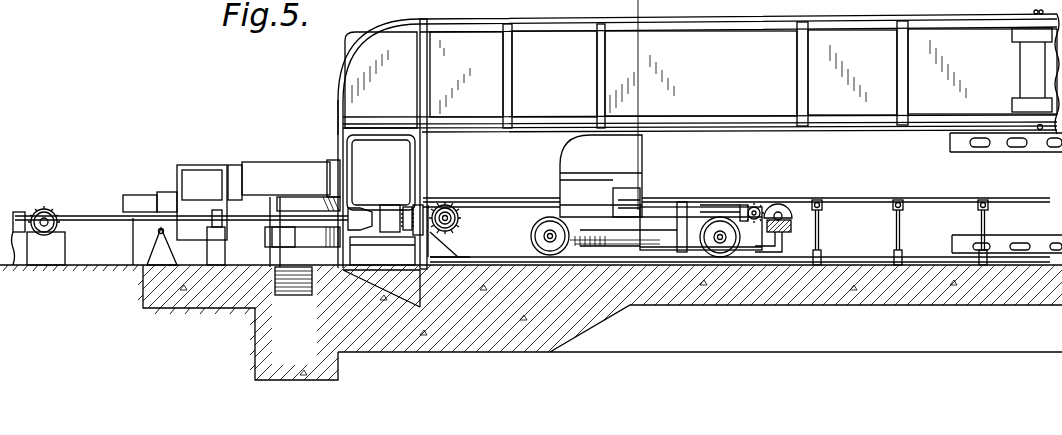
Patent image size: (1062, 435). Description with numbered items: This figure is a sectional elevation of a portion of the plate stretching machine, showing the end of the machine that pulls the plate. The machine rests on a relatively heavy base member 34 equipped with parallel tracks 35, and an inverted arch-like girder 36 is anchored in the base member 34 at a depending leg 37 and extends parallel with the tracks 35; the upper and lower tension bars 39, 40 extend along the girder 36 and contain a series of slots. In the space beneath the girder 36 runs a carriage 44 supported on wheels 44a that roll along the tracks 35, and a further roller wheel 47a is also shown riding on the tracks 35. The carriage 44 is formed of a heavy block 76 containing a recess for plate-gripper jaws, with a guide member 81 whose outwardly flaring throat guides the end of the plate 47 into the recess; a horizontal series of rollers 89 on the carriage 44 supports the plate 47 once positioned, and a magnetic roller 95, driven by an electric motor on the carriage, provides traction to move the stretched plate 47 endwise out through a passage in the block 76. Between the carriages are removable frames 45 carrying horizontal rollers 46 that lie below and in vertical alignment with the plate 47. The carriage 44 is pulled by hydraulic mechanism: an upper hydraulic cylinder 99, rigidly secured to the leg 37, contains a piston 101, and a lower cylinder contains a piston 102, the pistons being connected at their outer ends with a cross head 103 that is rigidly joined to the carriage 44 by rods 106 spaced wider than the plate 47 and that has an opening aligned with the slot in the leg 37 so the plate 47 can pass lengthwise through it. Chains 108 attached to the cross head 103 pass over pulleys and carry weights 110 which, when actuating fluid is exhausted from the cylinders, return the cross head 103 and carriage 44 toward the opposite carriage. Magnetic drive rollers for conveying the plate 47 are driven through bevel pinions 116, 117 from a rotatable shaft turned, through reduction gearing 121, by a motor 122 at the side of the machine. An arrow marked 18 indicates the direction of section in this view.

The section line 18 is at (618, 5).
The base member 34 is at (578, 312).
The tracks 35 is at (494, 255).
The girder 36 is at (745, 100).
The leg 37 is at (413, 153).
The upper tension bar 39 is at (960, 148).
The lower tension bar 40 is at (1013, 238).
The carriage 44 is at (658, 247).
The wheels 44a is at (723, 256).
The frames 45 is at (897, 236).
The horizontal rollers 46 is at (823, 205).
The plate 47 is at (803, 199).
The roller wheel 47a is at (562, 222).
The block 76 is at (628, 157).
The guide member 81 is at (630, 196).
The rollers 89 is at (726, 210).
The magnetic roller 95 is at (778, 204).
The upper hydraulic cylinder 99 is at (291, 203).
The piston 101 is at (233, 172).
The piston 102 is at (232, 226).
The cross head 103 is at (190, 182).
The rods 106 is at (522, 194).
The chains 108 is at (100, 222).
The weights 110 is at (287, 287).
The bevel pinion 116 is at (460, 220).
The bevel pinion 117 is at (47, 206).
The reduction gearing 121 is at (407, 202).
The motor 122 is at (358, 208).